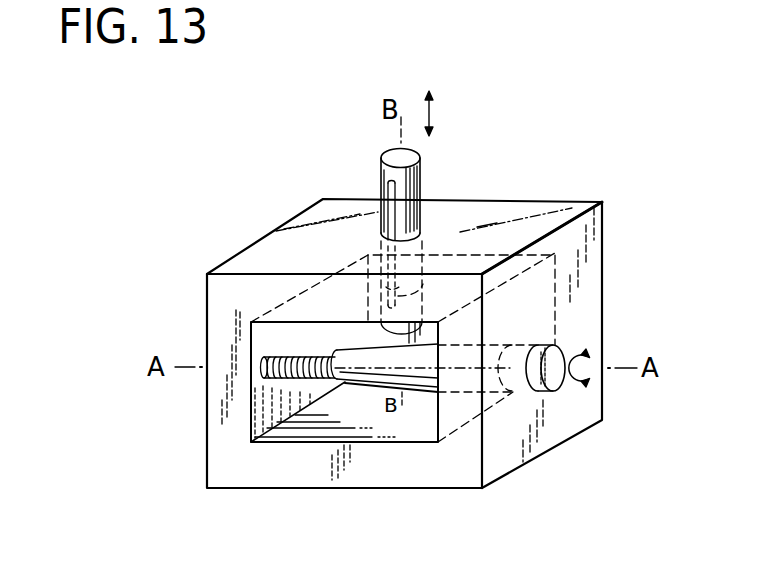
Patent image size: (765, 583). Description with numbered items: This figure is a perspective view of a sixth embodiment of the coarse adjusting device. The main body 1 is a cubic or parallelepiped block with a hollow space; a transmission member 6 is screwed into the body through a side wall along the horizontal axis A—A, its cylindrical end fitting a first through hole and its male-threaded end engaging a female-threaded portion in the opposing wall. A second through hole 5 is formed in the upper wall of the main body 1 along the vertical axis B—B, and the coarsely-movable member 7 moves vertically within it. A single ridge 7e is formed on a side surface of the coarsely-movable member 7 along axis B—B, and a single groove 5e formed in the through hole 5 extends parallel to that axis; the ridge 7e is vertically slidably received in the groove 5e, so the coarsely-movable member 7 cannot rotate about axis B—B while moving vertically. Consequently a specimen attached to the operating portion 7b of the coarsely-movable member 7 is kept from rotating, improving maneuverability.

The main body 1 is at (588, 263).
The second through hole 5 is at (402, 278).
The groove 5e is at (378, 247).
The transmission member 6 is at (358, 384).
The coarsely-movable member 7 is at (403, 223).
The operating portion 7b is at (410, 157).
The ridge 7e is at (386, 197).